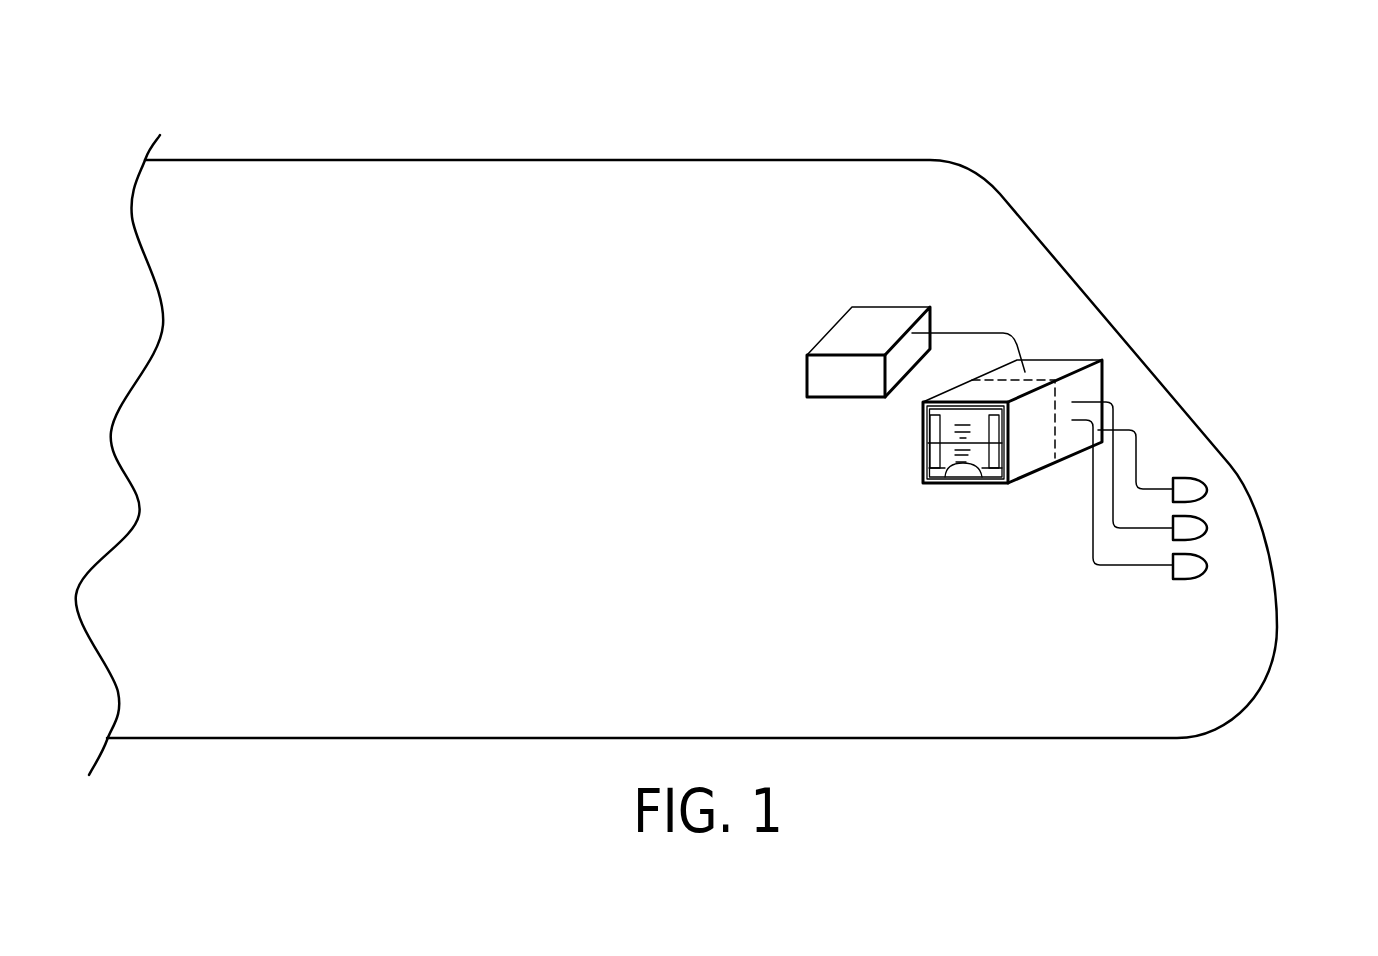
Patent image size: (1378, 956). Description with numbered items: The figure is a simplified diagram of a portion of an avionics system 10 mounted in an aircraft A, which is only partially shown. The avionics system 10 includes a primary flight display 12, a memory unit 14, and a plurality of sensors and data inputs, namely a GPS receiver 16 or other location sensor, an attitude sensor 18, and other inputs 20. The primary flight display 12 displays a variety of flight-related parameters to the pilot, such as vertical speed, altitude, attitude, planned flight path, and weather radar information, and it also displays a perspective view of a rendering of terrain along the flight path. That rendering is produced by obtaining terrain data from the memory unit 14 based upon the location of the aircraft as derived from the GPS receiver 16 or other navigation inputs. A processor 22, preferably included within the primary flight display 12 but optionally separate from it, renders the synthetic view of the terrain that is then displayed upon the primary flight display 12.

The aircraft A is at (722, 158).
The avionics system 10 is at (824, 468).
The primary flight display 12 is at (974, 489).
The memory unit 14 is at (853, 333).
The GPS receiver 16 is at (1207, 490).
The attitude sensor 18 is at (1207, 528).
The other inputs 20 is at (1207, 567).
The processor 22 is at (1055, 370).